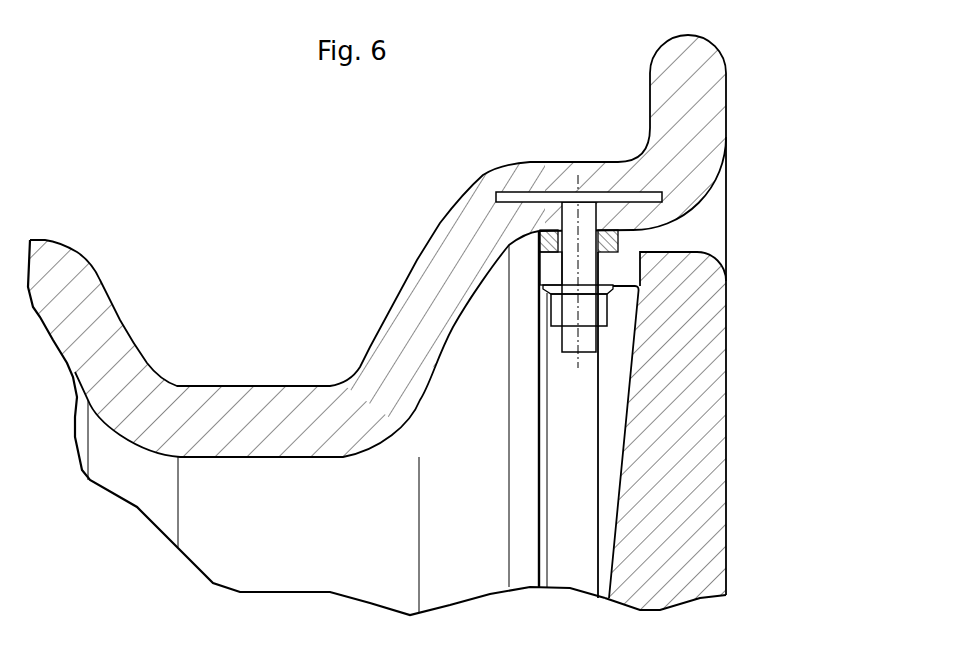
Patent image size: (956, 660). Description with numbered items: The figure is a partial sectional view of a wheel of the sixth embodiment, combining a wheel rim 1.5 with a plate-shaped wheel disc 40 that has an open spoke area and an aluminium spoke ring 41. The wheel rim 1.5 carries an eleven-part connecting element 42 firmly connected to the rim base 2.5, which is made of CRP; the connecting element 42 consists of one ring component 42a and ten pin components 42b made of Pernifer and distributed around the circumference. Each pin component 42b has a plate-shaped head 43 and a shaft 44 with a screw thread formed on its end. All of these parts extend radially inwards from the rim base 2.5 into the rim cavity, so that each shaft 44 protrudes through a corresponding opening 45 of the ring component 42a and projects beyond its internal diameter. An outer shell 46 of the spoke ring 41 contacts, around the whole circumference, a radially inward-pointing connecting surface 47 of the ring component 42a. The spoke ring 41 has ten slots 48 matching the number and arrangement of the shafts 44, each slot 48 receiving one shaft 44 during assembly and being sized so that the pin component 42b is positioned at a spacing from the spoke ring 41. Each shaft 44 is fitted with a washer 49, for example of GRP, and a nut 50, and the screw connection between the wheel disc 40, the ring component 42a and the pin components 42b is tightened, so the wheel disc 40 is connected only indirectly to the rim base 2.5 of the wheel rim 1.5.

The wheel rim 1.5 is at (727, 47).
The rim base 2.5 is at (73, 248).
The wheel disc 40 is at (683, 463).
The spoke ring 41 is at (620, 387).
The connecting element 42 is at (503, 353).
The ring component 42a is at (540, 240).
The pin component 42b is at (428, 243).
The plate-shaped head 43 is at (545, 198).
The shaft 44 is at (568, 265).
The opening 45 is at (538, 230).
The outer shell 46 is at (705, 227).
The connecting surface 47 is at (615, 248).
The slot 48 is at (547, 278).
The washer 49 is at (613, 290).
The nut 50 is at (601, 313).